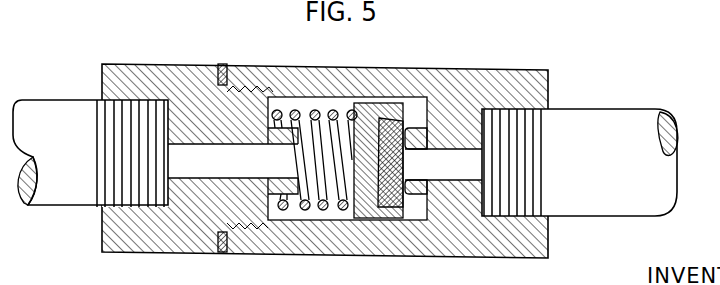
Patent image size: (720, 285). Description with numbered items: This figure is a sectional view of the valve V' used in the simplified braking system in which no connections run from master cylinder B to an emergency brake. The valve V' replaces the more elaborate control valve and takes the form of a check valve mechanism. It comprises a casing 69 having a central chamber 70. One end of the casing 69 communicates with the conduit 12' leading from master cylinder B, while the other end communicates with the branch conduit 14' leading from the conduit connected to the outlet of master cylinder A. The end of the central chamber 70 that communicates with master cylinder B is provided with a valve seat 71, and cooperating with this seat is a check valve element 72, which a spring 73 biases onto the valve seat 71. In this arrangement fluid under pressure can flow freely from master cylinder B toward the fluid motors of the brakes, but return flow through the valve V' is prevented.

The valve V' is at (325, 149).
The casing 69 is at (468, 87).
The central chamber 70 is at (323, 108).
The valve seat 71 is at (411, 183).
The check valve element 72 is at (393, 212).
The spring 73 is at (305, 210).
The branch conduit 14' is at (90, 153).
The conduit 12' is at (580, 162).